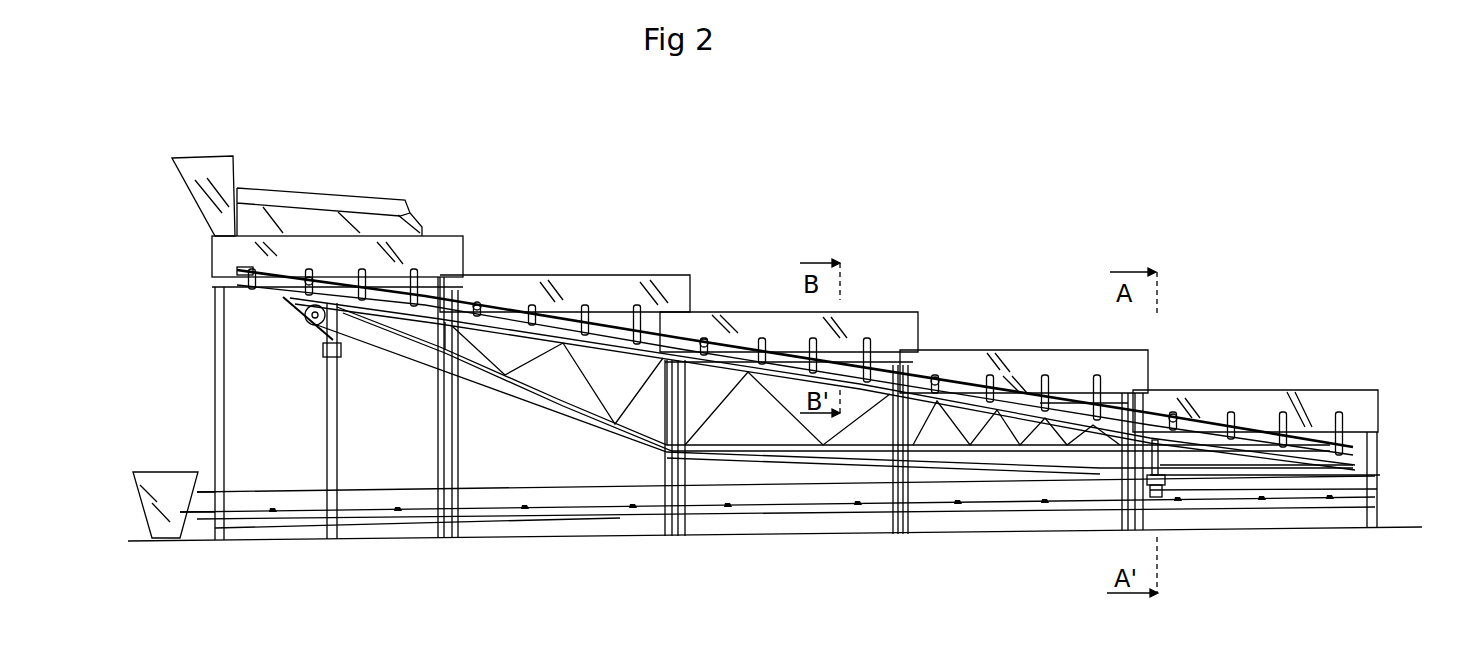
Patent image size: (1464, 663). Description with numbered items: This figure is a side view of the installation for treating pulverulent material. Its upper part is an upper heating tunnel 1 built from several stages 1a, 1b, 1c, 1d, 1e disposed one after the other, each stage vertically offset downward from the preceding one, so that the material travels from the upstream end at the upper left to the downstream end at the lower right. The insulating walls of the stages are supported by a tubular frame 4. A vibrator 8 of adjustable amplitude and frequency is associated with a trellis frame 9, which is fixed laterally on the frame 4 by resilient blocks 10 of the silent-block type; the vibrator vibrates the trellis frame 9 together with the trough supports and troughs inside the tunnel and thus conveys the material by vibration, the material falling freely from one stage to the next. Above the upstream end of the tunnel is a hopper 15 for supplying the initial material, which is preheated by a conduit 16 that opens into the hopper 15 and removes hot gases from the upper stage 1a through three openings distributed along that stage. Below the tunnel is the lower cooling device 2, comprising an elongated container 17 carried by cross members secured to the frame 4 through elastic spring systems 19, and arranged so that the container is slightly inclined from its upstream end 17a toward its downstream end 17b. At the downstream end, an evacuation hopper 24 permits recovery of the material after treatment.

The upper heating tunnel 1 is at (497, 264).
The upper stage of the heating tunnel 1a is at (418, 240).
The stage of the heating tunnel 1b is at (597, 268).
The stage of the heating tunnel 1c is at (877, 322).
The stage of the heating tunnel 1d is at (1052, 365).
The stage of the heating tunnel 1e is at (1250, 408).
The lower cooling device 2 is at (310, 489).
The tubular frame 4 is at (455, 437).
The vibrator 8 is at (305, 325).
The trellis frame 9 is at (387, 330).
The resilient blocks 10 is at (1165, 487).
The hopper 15 is at (225, 167).
The conduit 16 is at (314, 197).
The container 17 is at (539, 500).
The upstream end of the container 17a is at (1360, 485).
The downstream end of the container 17b is at (200, 502).
The spring systems 19 is at (945, 505).
The hopper 24 is at (160, 482).